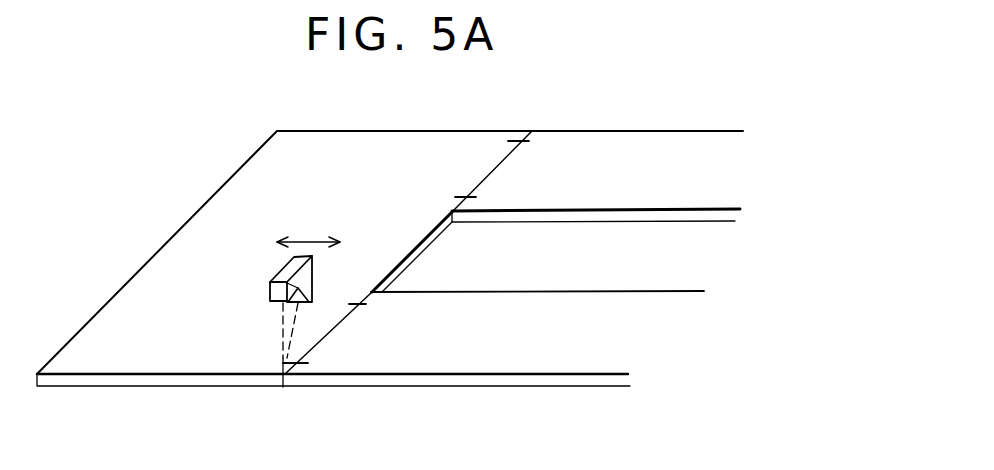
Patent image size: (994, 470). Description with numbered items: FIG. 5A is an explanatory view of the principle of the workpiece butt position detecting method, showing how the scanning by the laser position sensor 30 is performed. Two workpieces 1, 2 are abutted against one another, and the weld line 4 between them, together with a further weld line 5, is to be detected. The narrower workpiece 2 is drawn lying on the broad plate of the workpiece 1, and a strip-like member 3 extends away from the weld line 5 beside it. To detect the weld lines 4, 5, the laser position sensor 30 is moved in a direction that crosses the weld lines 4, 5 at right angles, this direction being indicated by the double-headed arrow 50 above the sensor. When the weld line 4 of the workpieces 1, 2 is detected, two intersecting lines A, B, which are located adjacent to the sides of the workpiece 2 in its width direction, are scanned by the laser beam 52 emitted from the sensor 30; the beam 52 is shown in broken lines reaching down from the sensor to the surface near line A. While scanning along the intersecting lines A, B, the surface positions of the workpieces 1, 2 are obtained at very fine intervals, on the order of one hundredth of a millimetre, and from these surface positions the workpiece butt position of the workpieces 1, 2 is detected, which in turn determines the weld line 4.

The workpiece 1 is at (206, 219).
The workpiece 2 is at (562, 384).
The thin film strip 3 is at (588, 142).
The weld line 4 is at (335, 340).
The weld line 5 is at (490, 172).
The laser position sensor 30 is at (270, 300).
The arrow 50 is at (312, 240).
The laser beam 52 is at (276, 388).
The intersecting line A is at (300, 374).
The intersecting line B is at (362, 305).